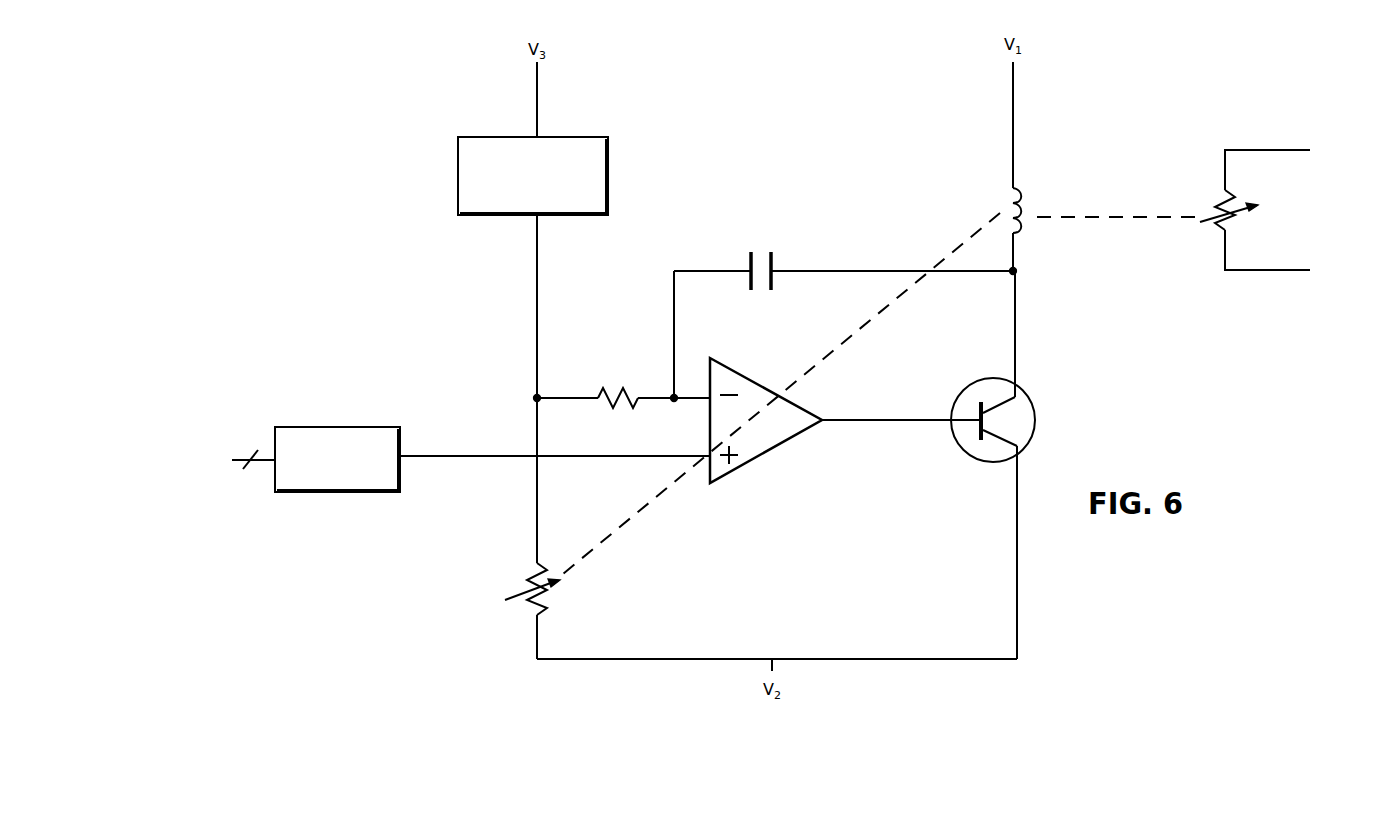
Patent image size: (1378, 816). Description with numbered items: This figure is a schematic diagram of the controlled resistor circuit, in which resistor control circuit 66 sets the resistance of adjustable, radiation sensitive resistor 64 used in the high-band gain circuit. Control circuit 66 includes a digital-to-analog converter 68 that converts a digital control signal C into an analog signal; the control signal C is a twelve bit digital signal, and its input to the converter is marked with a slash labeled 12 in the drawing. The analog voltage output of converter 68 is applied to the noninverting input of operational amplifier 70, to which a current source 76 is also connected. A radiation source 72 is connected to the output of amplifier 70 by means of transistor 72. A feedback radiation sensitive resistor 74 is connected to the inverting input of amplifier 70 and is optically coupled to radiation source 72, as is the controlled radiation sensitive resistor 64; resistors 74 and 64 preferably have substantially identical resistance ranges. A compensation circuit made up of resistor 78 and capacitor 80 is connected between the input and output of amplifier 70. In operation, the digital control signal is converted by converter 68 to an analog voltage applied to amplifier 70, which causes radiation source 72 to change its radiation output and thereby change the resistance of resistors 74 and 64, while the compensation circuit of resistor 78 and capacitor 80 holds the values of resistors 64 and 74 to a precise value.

The control value input 12 is at (224, 463).
The adjustable resistor 64 is at (1306, 183).
The resistor control circuit 66 is at (418, 648).
The digital-to-analog converter 68 is at (335, 492).
The operational amplifier 70 is at (786, 447).
The radiation source 72 is at (1022, 210).
The feedback radiation sensitive resistor 74 is at (545, 603).
The current source 76 is at (610, 178).
The resistor 78 is at (618, 393).
The capacitor 80 is at (773, 262).